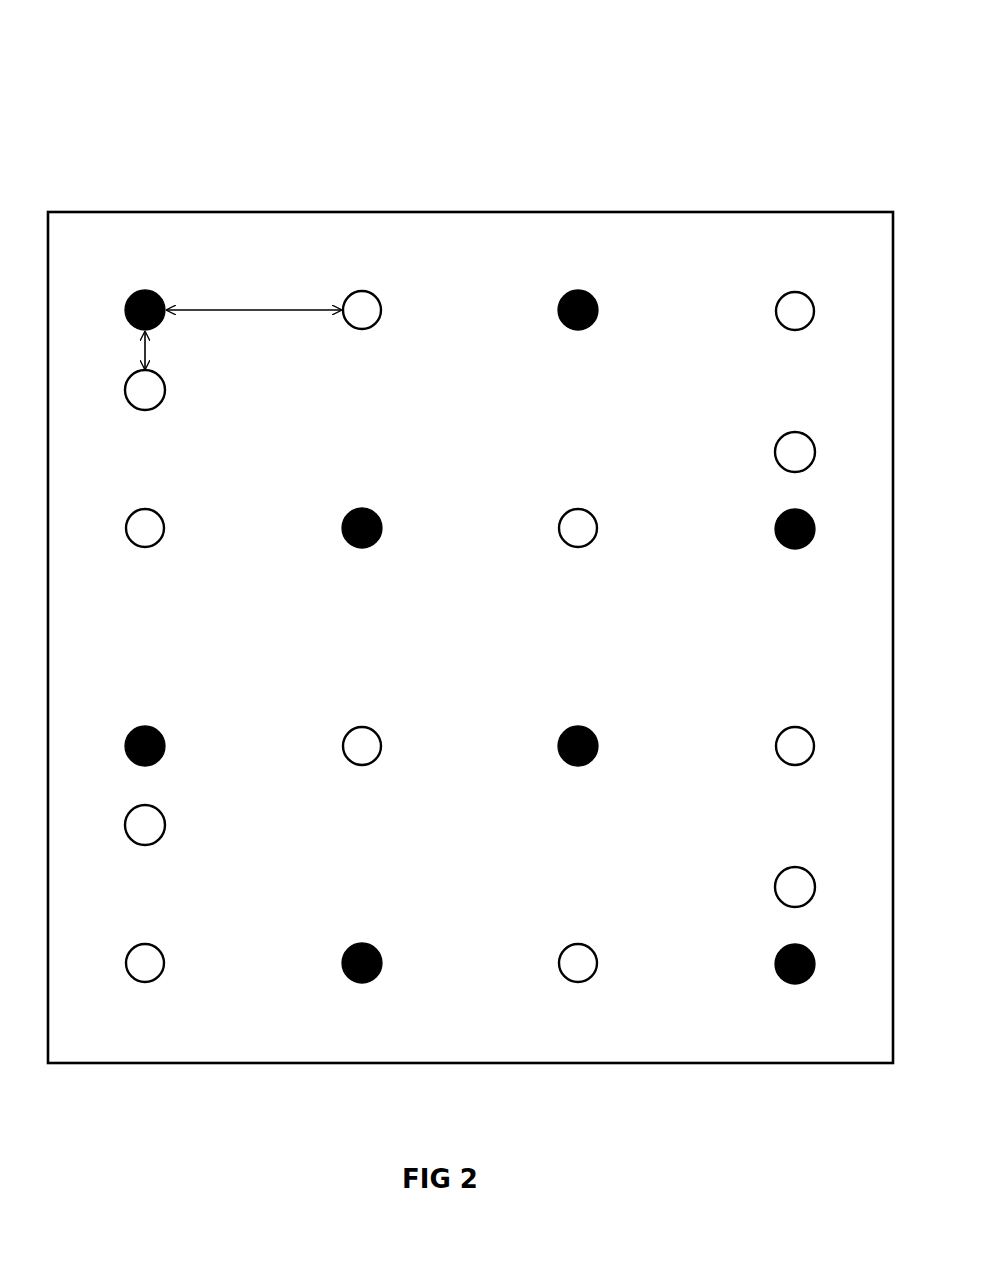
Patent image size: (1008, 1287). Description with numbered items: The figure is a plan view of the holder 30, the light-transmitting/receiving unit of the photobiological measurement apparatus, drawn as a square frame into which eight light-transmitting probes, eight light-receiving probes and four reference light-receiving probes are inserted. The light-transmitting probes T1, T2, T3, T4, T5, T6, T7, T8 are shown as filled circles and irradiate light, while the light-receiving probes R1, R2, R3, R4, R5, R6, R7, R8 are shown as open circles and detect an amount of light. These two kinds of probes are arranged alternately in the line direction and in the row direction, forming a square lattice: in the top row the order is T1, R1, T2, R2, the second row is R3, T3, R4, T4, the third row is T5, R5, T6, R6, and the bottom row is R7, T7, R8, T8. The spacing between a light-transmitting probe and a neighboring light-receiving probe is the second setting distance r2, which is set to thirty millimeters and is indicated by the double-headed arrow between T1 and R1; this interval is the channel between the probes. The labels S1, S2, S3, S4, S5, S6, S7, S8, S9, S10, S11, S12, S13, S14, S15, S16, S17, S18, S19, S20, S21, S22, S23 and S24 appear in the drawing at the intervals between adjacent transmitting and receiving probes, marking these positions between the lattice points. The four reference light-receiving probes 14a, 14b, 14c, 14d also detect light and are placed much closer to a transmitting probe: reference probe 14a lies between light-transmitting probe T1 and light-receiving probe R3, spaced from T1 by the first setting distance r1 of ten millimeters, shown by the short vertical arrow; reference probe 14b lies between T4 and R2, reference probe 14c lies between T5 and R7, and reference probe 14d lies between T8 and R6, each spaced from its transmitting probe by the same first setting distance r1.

The holder 30 is at (477, 158).
The light-transmitting probe T1 is at (119, 310).
The light-transmitting probe T2 is at (578, 293).
The light-transmitting probe T3 is at (362, 546).
The light-transmitting probe T4 is at (822, 529).
The light-transmitting probe T5 is at (119, 746).
The light-transmitting probe T6 is at (578, 763).
The light-transmitting probe T7 is at (362, 981).
The light-transmitting probe T8 is at (822, 964).
The light-receiving probe R1 is at (362, 292).
The light-receiving probe R2 is at (824, 311).
The light-receiving probe R3 is at (118, 528).
The light-receiving probe R4 is at (578, 546).
The light-receiving probe R5 is at (362, 764).
The light-receiving probe R6 is at (824, 746).
The light-receiving probe R7 is at (118, 963).
The light-receiving probe R8 is at (578, 981).
The sensing position S1 is at (255, 297).
The sensing position S2 is at (472, 311).
The sensing position S3 is at (690, 311).
The sensing position S4 is at (145, 427).
The sensing position S5 is at (362, 421).
The sensing position S6 is at (578, 421).
The sensing position S7 is at (795, 413).
The sensing position S8 is at (253, 529).
The sensing position S9 is at (472, 529).
The sensing position S10 is at (690, 529).
The sensing position S11 is at (145, 637).
The sensing position S12 is at (362, 637).
The sensing position S13 is at (578, 637).
The sensing position S14 is at (795, 637).
The sensing position S15 is at (253, 747).
The sensing position S16 is at (472, 747).
The sensing position S17 is at (690, 747).
The sensing position S18 is at (145, 864).
The sensing position S19 is at (362, 856).
The sensing position S20 is at (578, 856).
The sensing position S21 is at (795, 847).
The sensing position S22 is at (253, 964).
The sensing position S23 is at (472, 964).
The sensing position S24 is at (690, 964).
The reference light-receiving probe 14a is at (111, 390).
The reference light-receiving probe 14b is at (829, 452).
The reference light-receiving probe 14c is at (112, 825).
The reference light-receiving probe 14d is at (829, 887).
The first setting distance r1 is at (166, 350).
The second setting distance r2 is at (254, 326).